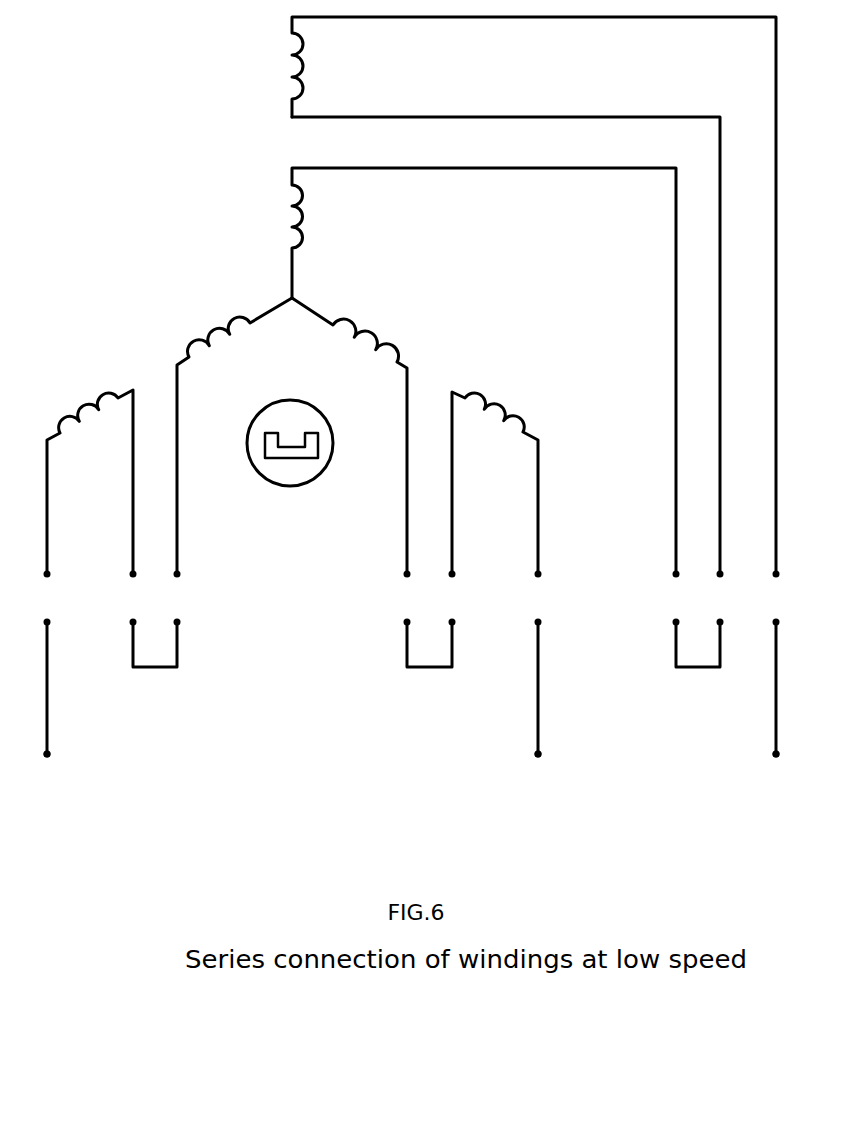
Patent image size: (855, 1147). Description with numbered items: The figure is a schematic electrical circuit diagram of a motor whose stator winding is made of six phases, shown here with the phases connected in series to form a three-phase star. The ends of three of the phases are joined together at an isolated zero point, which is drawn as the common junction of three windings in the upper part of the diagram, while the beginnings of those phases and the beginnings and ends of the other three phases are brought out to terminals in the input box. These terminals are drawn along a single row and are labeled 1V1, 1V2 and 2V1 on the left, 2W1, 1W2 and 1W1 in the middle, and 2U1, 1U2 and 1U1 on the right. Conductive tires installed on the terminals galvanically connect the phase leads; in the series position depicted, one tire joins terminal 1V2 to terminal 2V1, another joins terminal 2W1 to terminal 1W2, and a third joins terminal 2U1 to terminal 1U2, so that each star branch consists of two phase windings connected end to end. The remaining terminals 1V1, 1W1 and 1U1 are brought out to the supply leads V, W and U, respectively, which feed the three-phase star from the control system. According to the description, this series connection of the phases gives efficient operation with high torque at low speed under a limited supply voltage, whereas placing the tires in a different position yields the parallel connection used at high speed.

The terminal 1V1 of V-phase first winding 1V1 is at (36, 672).
The terminal 1V2 of V-phase first winding 1V2 is at (128, 627).
The terminal 2V1 of V-phase second winding 2V1 is at (183, 627).
The terminal 2W1 of W-phase second winding 2W1 is at (400, 627).
The terminal 1W2 of W-phase first winding 1W2 is at (457, 627).
The terminal 1W1 of W-phase first winding 1W1 is at (547, 672).
The terminal 2U1 of U-phase second winding 2U1 is at (669, 627).
The terminal 1U2 of U-phase first winding 1U2 is at (720, 627).
The terminal 1U1 of U-phase first winding 1U1 is at (783, 672).
The V-phase supply connection V is at (34, 777).
The W-phase supply connection W is at (538, 777).
The U-phase supply connection U is at (773, 777).